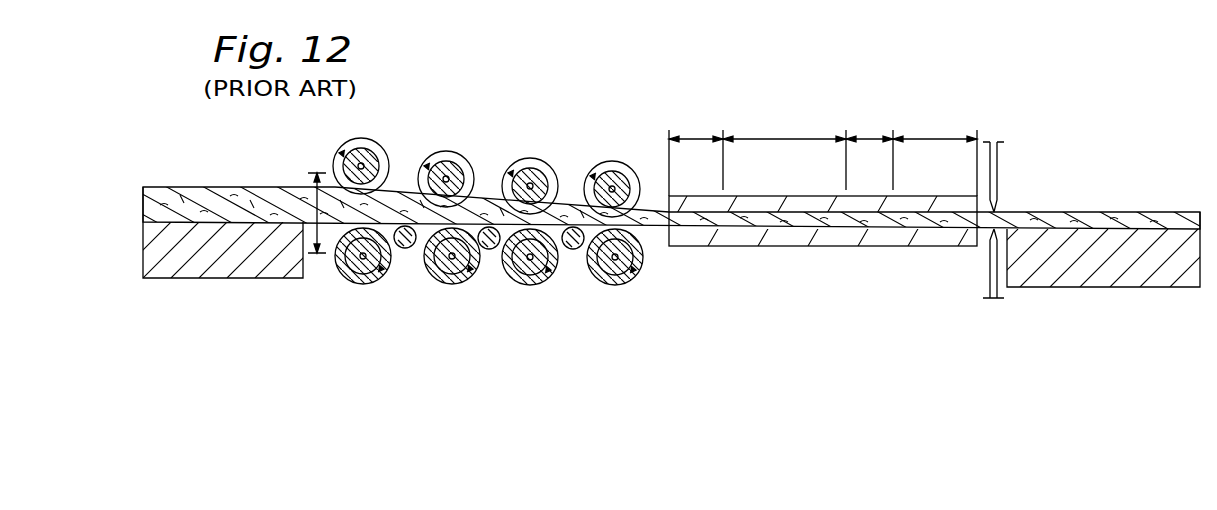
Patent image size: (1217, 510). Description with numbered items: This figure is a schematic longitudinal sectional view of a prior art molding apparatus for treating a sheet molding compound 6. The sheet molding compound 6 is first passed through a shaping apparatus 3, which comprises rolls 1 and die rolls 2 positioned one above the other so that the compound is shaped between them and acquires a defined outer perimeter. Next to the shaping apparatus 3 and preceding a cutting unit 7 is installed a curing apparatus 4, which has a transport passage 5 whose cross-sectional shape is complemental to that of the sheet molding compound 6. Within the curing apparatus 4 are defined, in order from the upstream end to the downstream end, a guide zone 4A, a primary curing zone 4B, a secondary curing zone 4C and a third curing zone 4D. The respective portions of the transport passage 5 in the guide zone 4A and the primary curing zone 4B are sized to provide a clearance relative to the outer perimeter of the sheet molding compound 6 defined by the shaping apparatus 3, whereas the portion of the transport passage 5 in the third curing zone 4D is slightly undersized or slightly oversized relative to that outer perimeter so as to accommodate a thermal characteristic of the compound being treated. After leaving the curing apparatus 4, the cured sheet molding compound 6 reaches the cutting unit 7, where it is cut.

The rolls 1 is at (615, 285).
The die rolls 2 is at (612, 162).
The shaping apparatus 3 is at (488, 188).
The curing apparatus 4 is at (838, 246).
The guide zone 4A is at (694, 138).
The primary curing zone 4B is at (785, 138).
The secondary curing zone 4C is at (864, 138).
The third curing zone 4D is at (937, 138).
The transport passage 5 is at (883, 227).
The sheet molding compound 6 is at (192, 200).
The cutting unit 7 is at (996, 142).